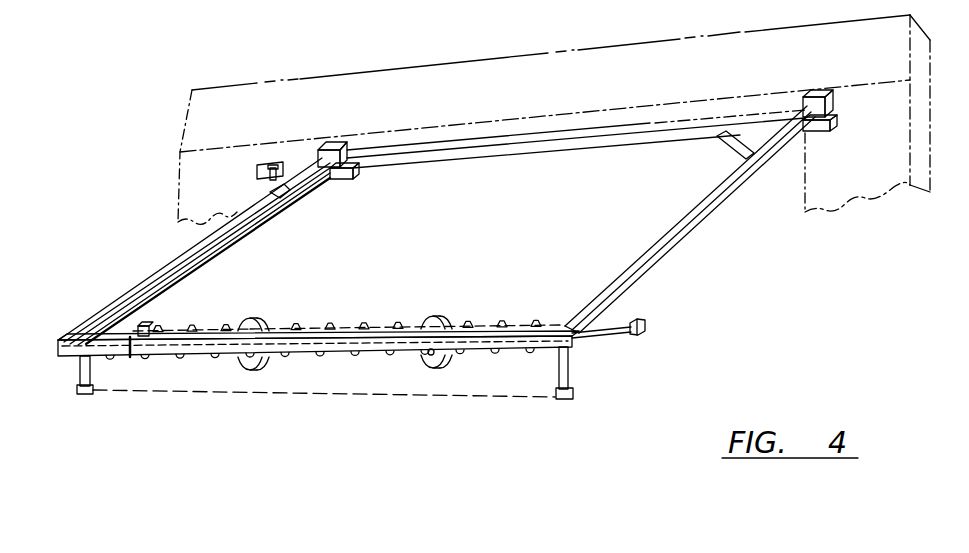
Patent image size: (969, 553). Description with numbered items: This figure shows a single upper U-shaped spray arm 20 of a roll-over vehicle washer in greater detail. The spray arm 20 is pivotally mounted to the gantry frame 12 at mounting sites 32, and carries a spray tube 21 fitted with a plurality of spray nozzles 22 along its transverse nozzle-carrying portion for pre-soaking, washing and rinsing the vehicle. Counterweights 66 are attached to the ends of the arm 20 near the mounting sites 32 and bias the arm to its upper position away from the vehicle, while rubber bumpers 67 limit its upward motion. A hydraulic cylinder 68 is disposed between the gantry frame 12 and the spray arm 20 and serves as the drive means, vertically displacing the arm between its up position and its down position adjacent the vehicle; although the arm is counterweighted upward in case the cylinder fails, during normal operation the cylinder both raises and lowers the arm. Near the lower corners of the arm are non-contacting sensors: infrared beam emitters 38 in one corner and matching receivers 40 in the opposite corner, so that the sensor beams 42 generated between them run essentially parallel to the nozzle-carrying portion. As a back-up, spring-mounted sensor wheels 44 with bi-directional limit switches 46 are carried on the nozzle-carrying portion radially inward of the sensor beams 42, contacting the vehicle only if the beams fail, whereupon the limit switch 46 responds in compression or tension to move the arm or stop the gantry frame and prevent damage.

The gantry frame 12 is at (522, 86).
The U-shaped spray arm 20 is at (712, 214).
The spray tube 21 is at (303, 329).
The spray nozzle 22 is at (399, 328).
The mounting site 32 is at (295, 157).
The infrared beam emitter 38 is at (130, 352).
The receiver 40 is at (631, 348).
The sensor beam 42 is at (319, 402).
The sensor wheel 44 is at (447, 372).
The bi-directional limit switch 46 is at (424, 360).
The counterweight 66 is at (358, 137).
The rubber bumper 67 is at (339, 192).
The hydraulic cylinder 68 is at (250, 178).